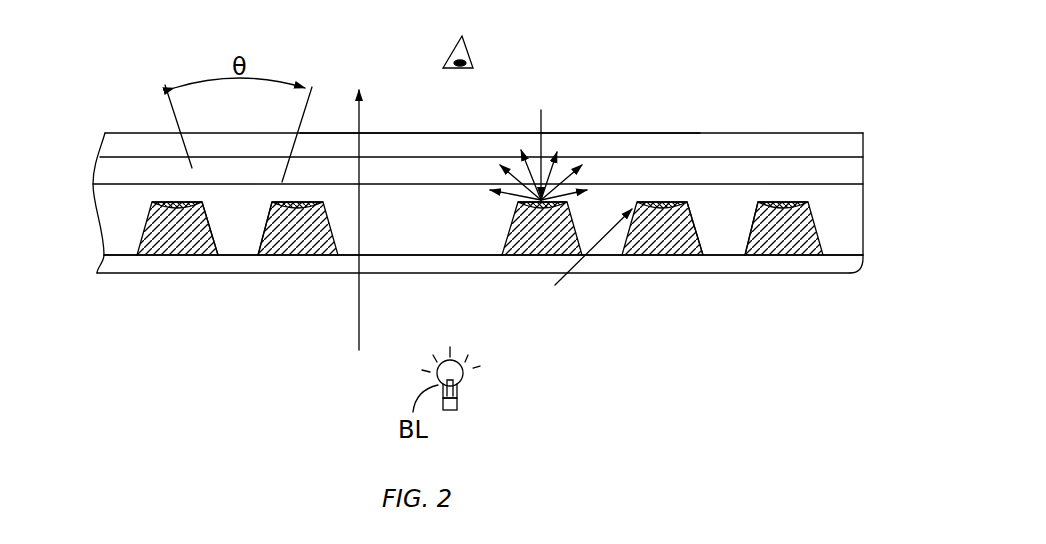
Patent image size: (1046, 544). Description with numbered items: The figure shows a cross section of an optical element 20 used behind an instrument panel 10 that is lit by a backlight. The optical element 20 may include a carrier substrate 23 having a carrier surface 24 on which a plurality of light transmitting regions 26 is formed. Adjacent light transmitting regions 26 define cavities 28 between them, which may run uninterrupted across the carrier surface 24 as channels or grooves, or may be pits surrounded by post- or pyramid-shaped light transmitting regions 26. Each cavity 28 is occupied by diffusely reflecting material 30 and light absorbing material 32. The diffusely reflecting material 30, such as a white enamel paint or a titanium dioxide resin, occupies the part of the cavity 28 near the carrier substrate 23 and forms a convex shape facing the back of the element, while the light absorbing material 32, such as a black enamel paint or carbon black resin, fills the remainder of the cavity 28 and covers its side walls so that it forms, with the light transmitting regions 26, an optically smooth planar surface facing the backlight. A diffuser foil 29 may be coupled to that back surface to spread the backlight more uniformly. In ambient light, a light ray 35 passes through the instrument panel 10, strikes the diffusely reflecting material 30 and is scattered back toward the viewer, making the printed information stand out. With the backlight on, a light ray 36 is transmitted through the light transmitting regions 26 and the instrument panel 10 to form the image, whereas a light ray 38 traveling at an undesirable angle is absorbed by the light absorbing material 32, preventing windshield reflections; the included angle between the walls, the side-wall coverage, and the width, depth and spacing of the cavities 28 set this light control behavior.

The instrument panel 10 is at (481, 143).
The optical element 20 is at (128, 55).
The carrier substrate 23 is at (123, 163).
The carrier surface 24 is at (106, 179).
The light transmitting regions 26 is at (138, 240).
The cavities 28 is at (270, 194).
The diffuser foil 29 is at (648, 265).
The diffusely reflecting material 30 is at (165, 200).
The light absorbing material 32 is at (172, 255).
The light ray 35 is at (542, 123).
The light ray 36 is at (359, 108).
The light ray 38 is at (593, 264).